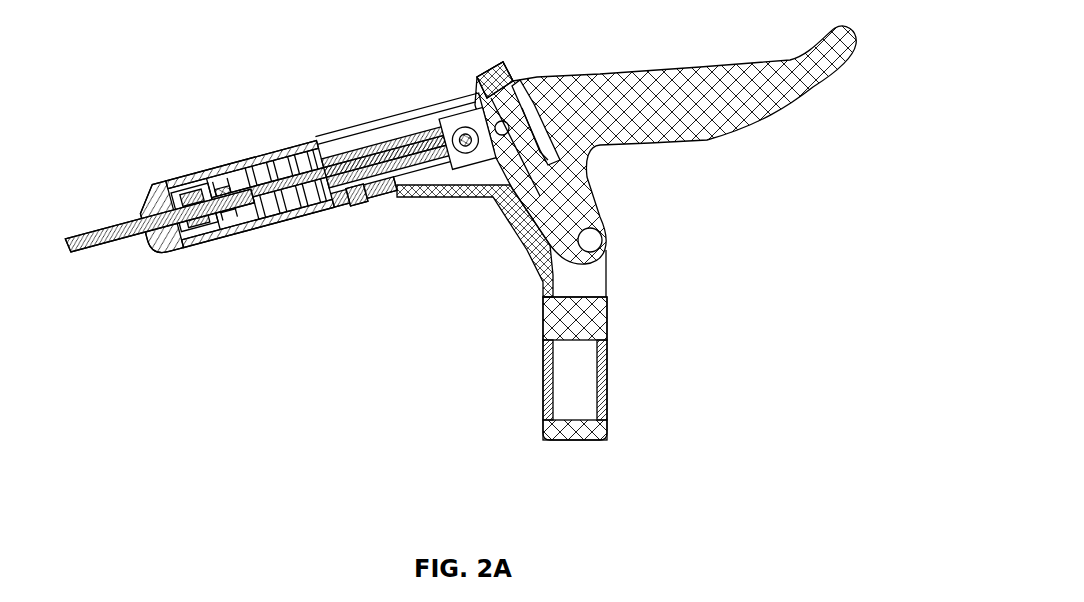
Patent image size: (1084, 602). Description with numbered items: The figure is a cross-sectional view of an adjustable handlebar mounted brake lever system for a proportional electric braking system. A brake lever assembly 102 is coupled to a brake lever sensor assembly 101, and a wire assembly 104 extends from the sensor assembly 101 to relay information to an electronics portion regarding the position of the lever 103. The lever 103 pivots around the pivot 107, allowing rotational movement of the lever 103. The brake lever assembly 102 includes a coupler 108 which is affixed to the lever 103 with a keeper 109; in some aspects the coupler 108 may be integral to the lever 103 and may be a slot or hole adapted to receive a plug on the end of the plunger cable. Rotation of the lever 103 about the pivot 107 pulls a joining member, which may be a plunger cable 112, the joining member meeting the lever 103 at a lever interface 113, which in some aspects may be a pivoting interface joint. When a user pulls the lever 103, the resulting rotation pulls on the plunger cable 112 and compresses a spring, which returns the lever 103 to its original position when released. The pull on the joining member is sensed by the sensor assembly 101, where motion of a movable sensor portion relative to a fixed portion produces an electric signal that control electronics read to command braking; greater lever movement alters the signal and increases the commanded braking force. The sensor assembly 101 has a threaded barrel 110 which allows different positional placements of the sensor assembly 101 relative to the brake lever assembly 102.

The brake lever sensor assembly 101 is at (236, 168).
The brake lever assembly 102 is at (403, 124).
The lever 103 is at (722, 96).
The wire assembly 104 is at (125, 243).
The pivot 107 is at (598, 246).
The coupler 108 is at (492, 198).
The keeper 109 is at (487, 72).
The threaded barrel 110 is at (323, 138).
The plunger cable 112 is at (313, 198).
The pivot pin 113 is at (432, 153).